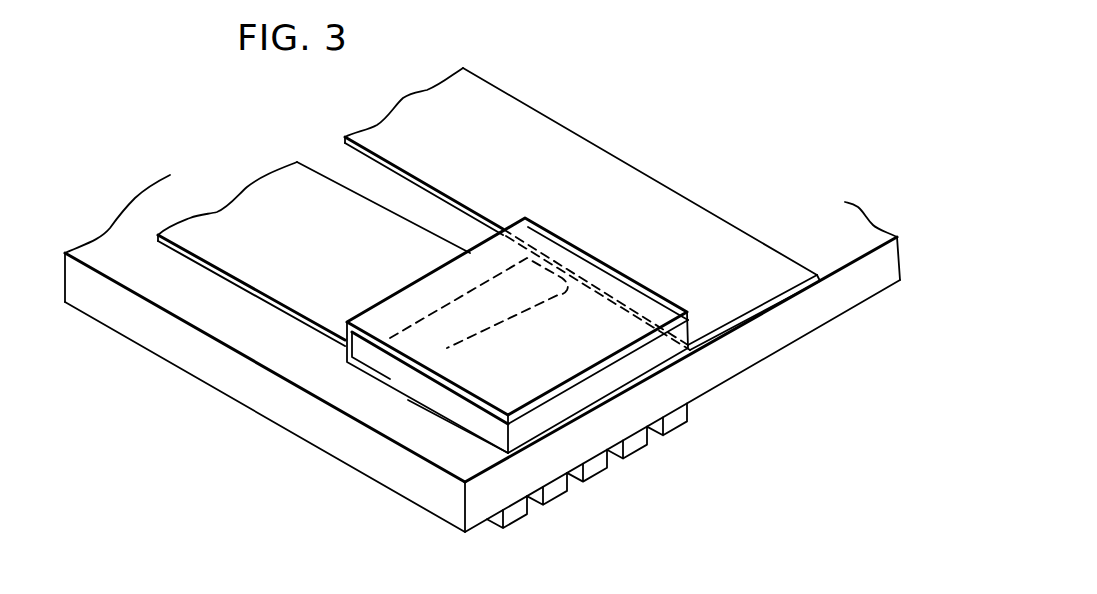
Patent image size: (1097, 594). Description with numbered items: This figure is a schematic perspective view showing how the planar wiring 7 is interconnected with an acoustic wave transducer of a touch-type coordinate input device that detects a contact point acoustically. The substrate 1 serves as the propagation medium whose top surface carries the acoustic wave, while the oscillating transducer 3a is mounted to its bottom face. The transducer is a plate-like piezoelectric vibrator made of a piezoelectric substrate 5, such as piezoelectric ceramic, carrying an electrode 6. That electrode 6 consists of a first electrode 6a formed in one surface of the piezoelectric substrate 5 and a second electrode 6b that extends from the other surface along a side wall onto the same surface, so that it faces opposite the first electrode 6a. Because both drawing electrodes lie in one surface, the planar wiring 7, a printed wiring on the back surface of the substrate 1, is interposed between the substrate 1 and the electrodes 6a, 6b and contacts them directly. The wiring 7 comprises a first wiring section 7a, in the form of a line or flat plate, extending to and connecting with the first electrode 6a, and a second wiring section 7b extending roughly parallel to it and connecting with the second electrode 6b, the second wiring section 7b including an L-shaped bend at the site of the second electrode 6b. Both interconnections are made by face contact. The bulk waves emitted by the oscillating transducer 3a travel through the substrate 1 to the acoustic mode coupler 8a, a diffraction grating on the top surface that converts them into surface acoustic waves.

The substrate 1 is at (765, 350).
The oscillating transducer 3a is at (577, 243).
The piezoelectric substrate 5 is at (463, 415).
The electrode 6 is at (453, 347).
The first electrode 6a is at (430, 392).
The second electrode 6b is at (643, 300).
The planar wiring 7 is at (582, 193).
The first wiring section 7a is at (355, 208).
The second wiring section 7b is at (582, 215).
The acoustic mode coupler 8a is at (603, 489).